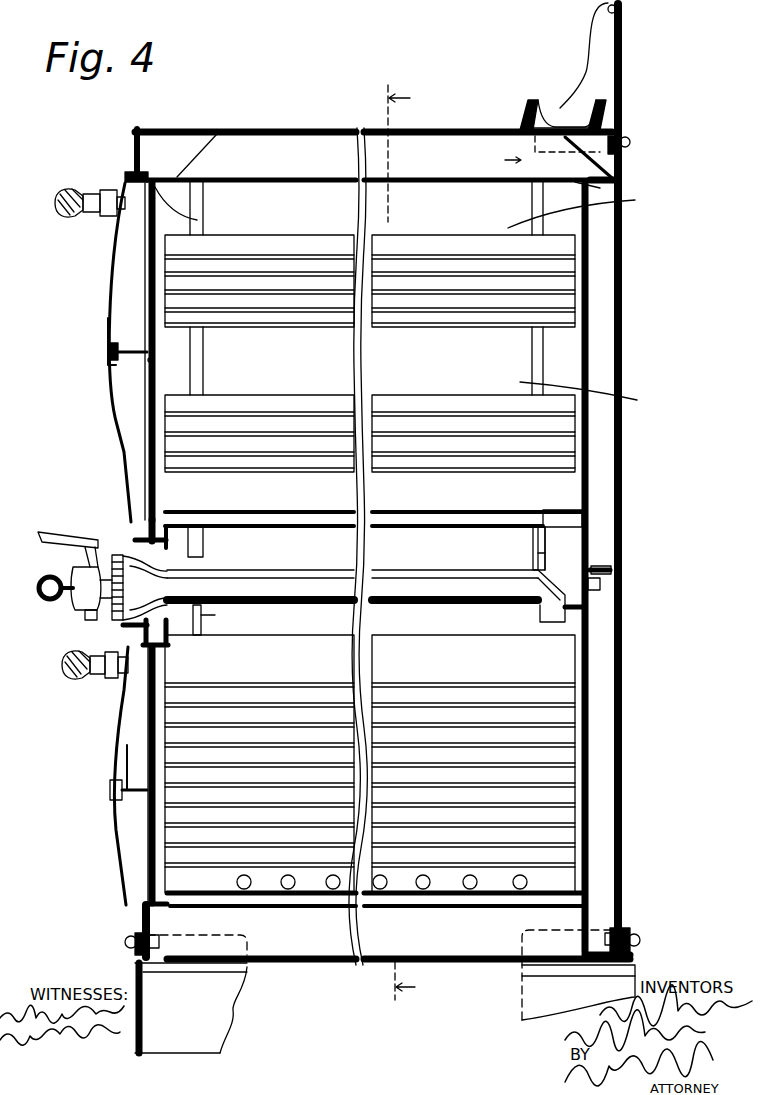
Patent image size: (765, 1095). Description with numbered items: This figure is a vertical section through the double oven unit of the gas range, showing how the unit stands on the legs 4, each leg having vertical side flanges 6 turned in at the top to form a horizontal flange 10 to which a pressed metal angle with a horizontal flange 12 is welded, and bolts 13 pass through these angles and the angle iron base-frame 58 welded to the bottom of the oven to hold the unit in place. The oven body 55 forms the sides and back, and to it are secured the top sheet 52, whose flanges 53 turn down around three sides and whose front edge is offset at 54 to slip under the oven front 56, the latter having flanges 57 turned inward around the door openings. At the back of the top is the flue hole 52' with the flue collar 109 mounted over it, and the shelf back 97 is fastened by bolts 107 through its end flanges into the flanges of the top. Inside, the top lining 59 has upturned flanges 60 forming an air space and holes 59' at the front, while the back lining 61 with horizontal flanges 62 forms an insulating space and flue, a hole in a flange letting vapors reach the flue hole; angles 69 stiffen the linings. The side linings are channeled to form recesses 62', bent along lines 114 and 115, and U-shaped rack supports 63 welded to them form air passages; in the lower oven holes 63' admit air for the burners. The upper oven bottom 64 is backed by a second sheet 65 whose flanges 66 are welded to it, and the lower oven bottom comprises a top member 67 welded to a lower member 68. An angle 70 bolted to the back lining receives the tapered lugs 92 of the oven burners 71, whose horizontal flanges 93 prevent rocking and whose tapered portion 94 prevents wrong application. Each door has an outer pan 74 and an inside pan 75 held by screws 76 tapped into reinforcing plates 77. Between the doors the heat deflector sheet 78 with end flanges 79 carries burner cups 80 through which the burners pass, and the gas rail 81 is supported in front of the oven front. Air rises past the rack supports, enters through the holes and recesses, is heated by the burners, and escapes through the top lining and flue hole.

The legs 4 is at (234, 1006).
The vertical side flange of leg 6 is at (143, 1012).
The horizontal flange of leg 10 is at (163, 967).
The horizontal flange of angle 12 is at (400, 543).
The bolts 13 is at (125, 943).
The top sheet 52 is at (373, 138).
The flue hole 52' is at (564, 102).
The flanges of top sheet 53 is at (621, 157).
The offset front edge of top sheet 54 is at (155, 137).
The oven body 55 is at (623, 281).
The oven front 56 is at (136, 152).
The flanges of oven front 57 is at (162, 503).
The angle iron base-frame 58 is at (147, 927).
The top lining 59 is at (382, 165).
The holes in top lining 59' is at (366, 271).
The flange of top lining 60 is at (587, 152).
The back lining 61 is at (588, 343).
The horizontal flanges of back lining 62 is at (577, 196).
The rectangular recess of side lining 62' is at (587, 299).
The rack supports 63 is at (370, 563).
The holes 63' is at (382, 906).
The upper oven bottom 64 is at (265, 510).
The second bottom sheet 65 is at (262, 529).
The horizontal flanges of second sheet 66 is at (204, 545).
The top member of lower oven bottom 67 is at (216, 539).
The lower member of lower oven bottom 68 is at (290, 912).
The sheet-metal angles 69 is at (593, 572).
The sheet-metal angle 70 is at (572, 603).
The oven burners 71 is at (387, 574).
The sheet-metal pan of door 74 is at (110, 395).
The inside pan 75 is at (146, 410).
The screws 76 is at (127, 352).
The reinforcing plates 77 is at (120, 757).
The heat deflector sheet 78 is at (170, 553).
The flanges of heat deflector 79 is at (168, 647).
The burner cups 80 is at (122, 628).
The gas rail 81 is at (48, 600).
The tapered lugs 92 is at (553, 605).
The horizontal flanges of burner 93 is at (525, 598).
The tapered portion of burner 94 is at (549, 540).
The shelf back 97 is at (626, 93).
The bolts 107 is at (631, 142).
The flue collar 109 is at (524, 114).
The bend line of side lining 114 is at (203, 628).
The bend line of side lining 115 is at (240, 616).